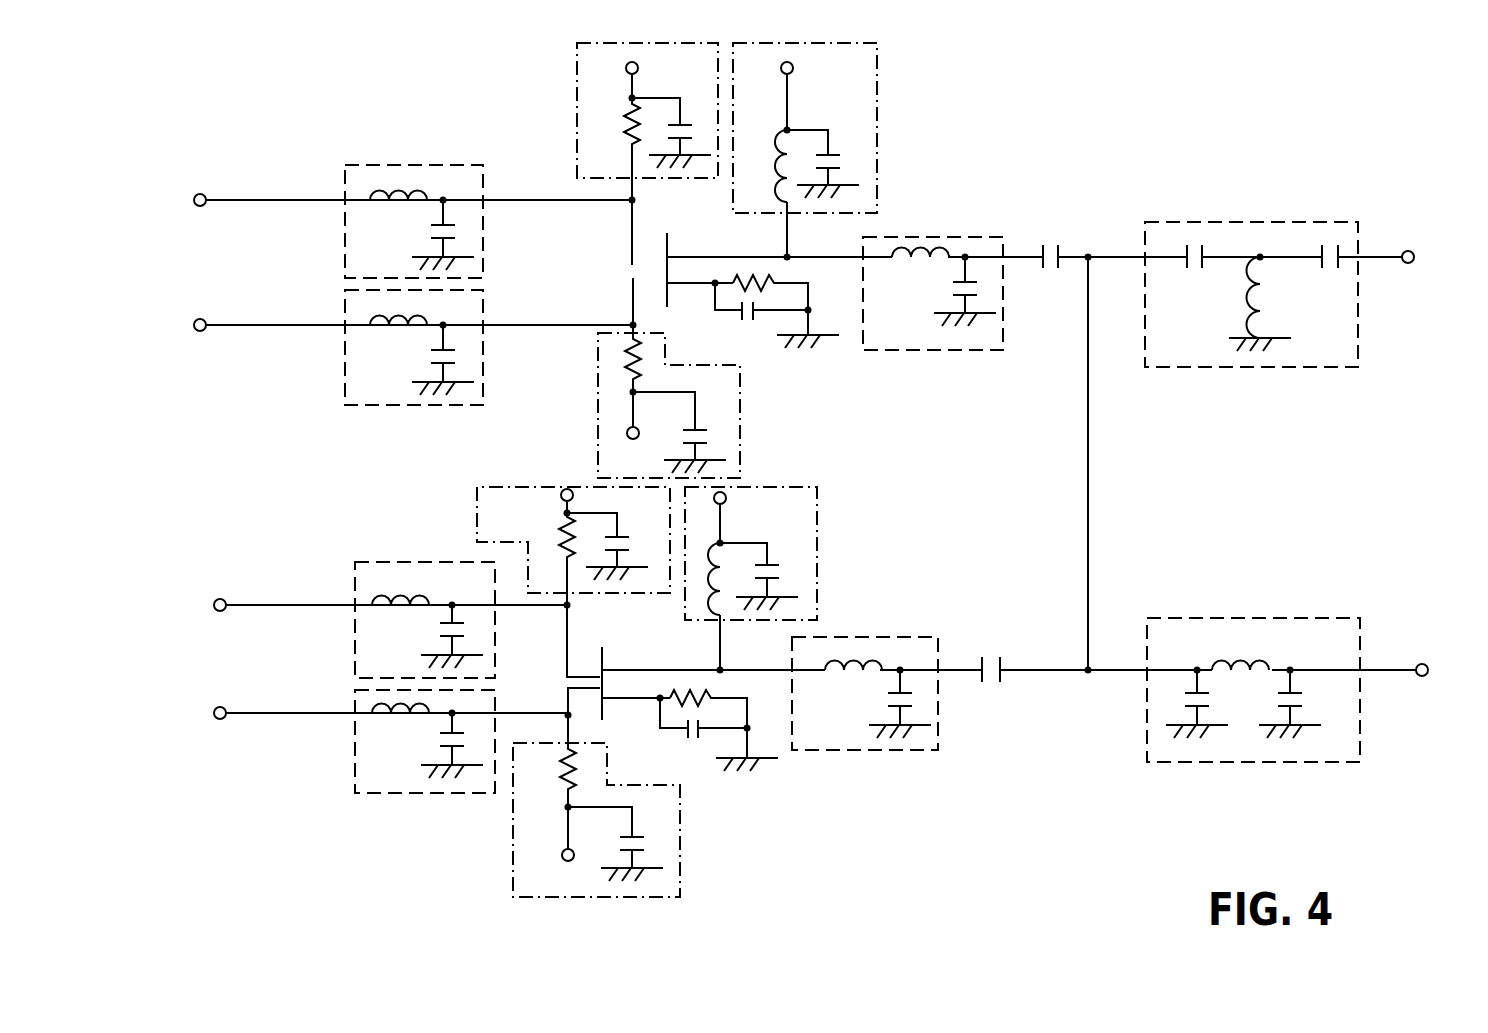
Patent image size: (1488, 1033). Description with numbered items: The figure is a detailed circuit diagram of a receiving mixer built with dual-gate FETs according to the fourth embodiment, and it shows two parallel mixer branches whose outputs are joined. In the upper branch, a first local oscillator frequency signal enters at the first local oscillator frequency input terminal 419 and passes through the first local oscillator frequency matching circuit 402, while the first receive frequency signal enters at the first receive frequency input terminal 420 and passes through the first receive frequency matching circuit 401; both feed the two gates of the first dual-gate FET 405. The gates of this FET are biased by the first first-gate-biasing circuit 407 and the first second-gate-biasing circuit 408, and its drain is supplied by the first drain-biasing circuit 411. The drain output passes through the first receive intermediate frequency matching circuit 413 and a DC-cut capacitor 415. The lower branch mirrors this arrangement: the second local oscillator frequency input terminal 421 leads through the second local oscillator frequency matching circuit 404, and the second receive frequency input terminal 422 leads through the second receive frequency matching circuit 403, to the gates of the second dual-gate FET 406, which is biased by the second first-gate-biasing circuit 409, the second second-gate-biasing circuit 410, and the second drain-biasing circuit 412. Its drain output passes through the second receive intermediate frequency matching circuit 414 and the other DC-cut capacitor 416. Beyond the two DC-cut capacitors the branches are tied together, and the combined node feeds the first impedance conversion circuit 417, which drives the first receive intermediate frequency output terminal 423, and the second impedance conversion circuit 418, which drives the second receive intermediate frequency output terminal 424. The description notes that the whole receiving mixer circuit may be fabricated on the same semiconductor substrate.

The first receive frequency matching circuit 401 is at (340, 311).
The first local oscillator frequency matching circuit 402 is at (340, 176).
The second receive frequency matching circuit 403 is at (350, 692).
The second local oscillator frequency matching circuit 404 is at (352, 560).
The first dual-gate FET 405 is at (626, 261).
The second dual-gate FET 406 is at (609, 655).
The first first-gate-biasing circuit 407 is at (594, 380).
The first second-gate-biasing circuit 408 is at (571, 71).
The second first-gate-biasing circuit 409 is at (499, 823).
The second second-gate-biasing circuit 410 is at (470, 481).
The first drain-biasing circuit 411 is at (885, 119).
The second drain-biasing circuit 412 is at (818, 479).
The first receive intermediate frequency matching circuit 413 is at (924, 232).
The second receive intermediate frequency matching circuit 414 is at (851, 626).
The DC-cut capacitor 415 is at (1058, 237).
The DC-cut capacitor 416 is at (994, 651).
The first impedance conversion circuit 417 is at (1237, 219).
The second impedance conversion circuit 418 is at (1237, 611).
The first local oscillator frequency input terminal 419 is at (188, 194).
The first receive frequency input terminal 420 is at (193, 320).
The second local oscillator frequency input terminal 421 is at (212, 592).
The second receive frequency input terminal 422 is at (212, 705).
The first receive intermediate frequency output terminal 423 is at (1425, 240).
The second receive intermediate frequency output terminal 424 is at (1428, 660).